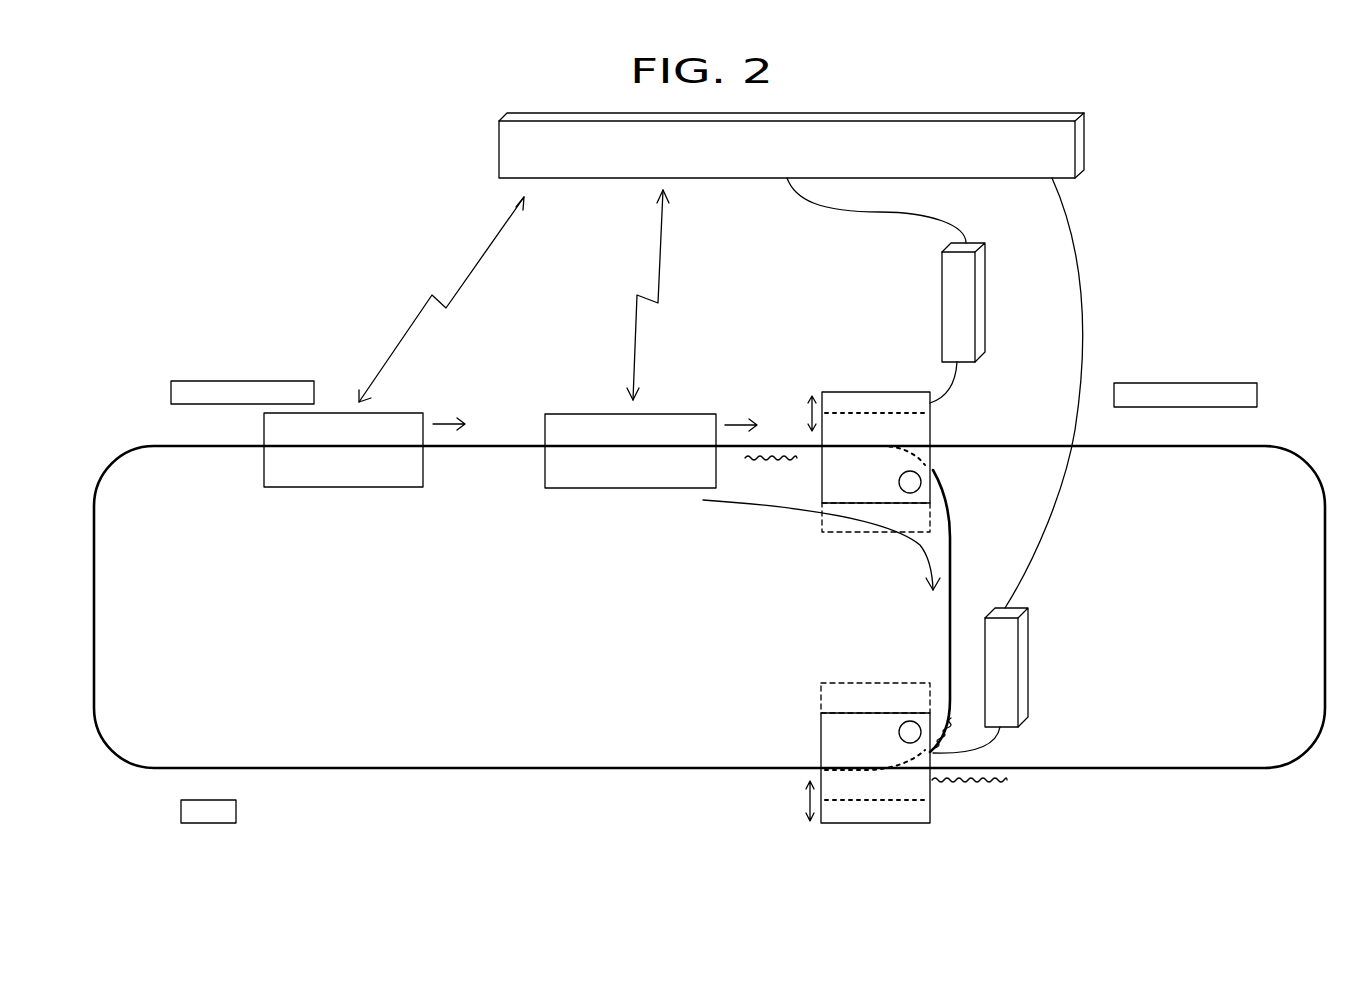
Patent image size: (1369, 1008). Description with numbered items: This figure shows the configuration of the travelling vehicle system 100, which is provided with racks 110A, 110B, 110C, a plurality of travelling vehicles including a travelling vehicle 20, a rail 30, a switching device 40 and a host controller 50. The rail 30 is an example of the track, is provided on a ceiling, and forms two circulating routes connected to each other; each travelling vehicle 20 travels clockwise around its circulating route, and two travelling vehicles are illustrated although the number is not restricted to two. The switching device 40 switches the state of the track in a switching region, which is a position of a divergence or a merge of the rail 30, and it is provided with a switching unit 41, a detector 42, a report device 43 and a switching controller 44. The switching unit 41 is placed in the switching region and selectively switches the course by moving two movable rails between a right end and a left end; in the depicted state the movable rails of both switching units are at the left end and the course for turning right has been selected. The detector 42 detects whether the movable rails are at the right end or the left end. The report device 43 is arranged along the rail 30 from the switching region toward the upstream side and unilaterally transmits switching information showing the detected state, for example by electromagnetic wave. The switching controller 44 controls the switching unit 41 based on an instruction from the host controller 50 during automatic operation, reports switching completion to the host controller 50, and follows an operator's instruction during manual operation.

The travelling vehicle system 100 is at (1183, 150).
The host controller 50 is at (1085, 125).
The rail 30 is at (97, 650).
The travelling vehicle 20 is at (548, 413).
The switching device 40 is at (830, 290).
The switching unit 41 is at (843, 392).
The detector 42 is at (918, 490).
The report device 43 is at (776, 462).
The switching controller 44 is at (985, 265).
The rack 110A is at (195, 823).
The rack 110B is at (258, 380).
The rack 110C is at (1200, 383).